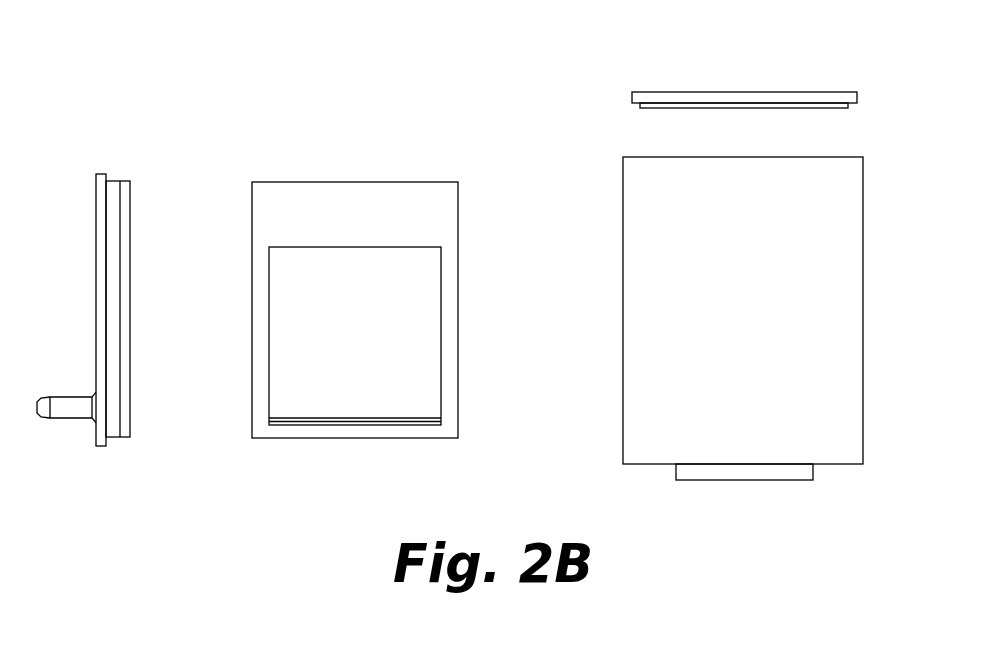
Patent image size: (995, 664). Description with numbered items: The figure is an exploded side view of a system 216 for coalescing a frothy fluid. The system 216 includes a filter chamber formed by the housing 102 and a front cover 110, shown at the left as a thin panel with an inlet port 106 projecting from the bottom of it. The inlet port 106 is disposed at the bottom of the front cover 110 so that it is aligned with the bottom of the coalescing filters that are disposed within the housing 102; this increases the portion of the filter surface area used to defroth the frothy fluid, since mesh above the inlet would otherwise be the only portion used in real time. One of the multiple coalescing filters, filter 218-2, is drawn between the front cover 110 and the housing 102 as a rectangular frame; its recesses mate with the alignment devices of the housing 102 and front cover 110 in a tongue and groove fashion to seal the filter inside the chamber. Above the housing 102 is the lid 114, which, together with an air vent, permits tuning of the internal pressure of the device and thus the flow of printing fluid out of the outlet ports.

The system for coalescing a frothy fluid 216 is at (186, 78).
The front cover 110 is at (121, 181).
The inlet port 106 is at (66, 410).
The coalescing filter 218-2 is at (413, 182).
The lid 114 is at (632, 93).
The housing 102 is at (623, 431).